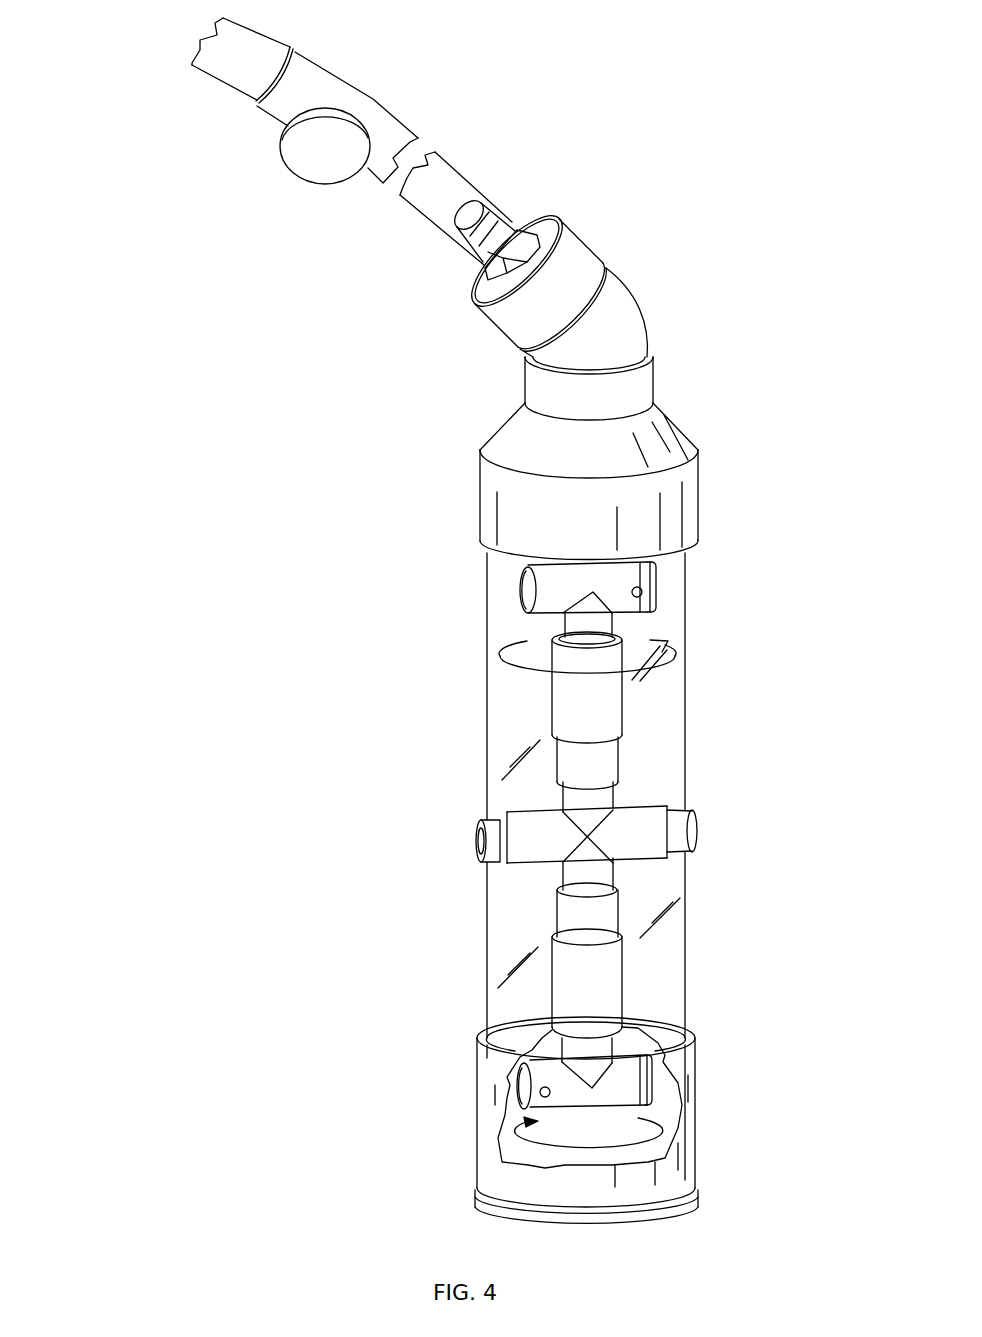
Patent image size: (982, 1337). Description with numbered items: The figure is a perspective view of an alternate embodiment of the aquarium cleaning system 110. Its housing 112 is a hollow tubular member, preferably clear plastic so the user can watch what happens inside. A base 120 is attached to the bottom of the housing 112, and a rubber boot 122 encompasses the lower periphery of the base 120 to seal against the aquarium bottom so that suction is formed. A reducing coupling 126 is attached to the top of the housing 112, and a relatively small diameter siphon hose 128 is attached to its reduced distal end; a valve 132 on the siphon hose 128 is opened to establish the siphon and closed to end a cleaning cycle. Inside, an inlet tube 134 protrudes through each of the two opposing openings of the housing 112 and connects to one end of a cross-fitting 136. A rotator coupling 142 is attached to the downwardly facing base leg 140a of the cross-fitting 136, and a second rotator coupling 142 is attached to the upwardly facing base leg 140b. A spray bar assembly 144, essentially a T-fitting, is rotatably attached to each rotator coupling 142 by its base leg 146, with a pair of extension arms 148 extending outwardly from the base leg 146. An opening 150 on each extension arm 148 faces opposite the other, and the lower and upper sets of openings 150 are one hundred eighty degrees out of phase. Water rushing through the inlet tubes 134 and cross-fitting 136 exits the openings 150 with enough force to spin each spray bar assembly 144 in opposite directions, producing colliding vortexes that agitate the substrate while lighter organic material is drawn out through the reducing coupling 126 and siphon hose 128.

The aquarium cleaning system 110 is at (328, 751).
The housing 112 is at (680, 731).
The base 120 is at (455, 1085).
The rubber boot 122 is at (495, 1190).
The reducing coupling 126 is at (690, 492).
The siphon hose 128 is at (467, 172).
The valve 132 is at (313, 172).
The inlet tube 134 is at (478, 848).
The cross-fitting 136 is at (540, 825).
The downwardly facing base leg 140a is at (585, 890).
The upwardly facing base leg 140b is at (613, 797).
The rotator coupling 142 is at (605, 972).
The spray bar assembly 144 is at (565, 626).
The base leg 146 is at (612, 626).
The extension arms 148 is at (547, 592).
The opening 150 is at (657, 590).